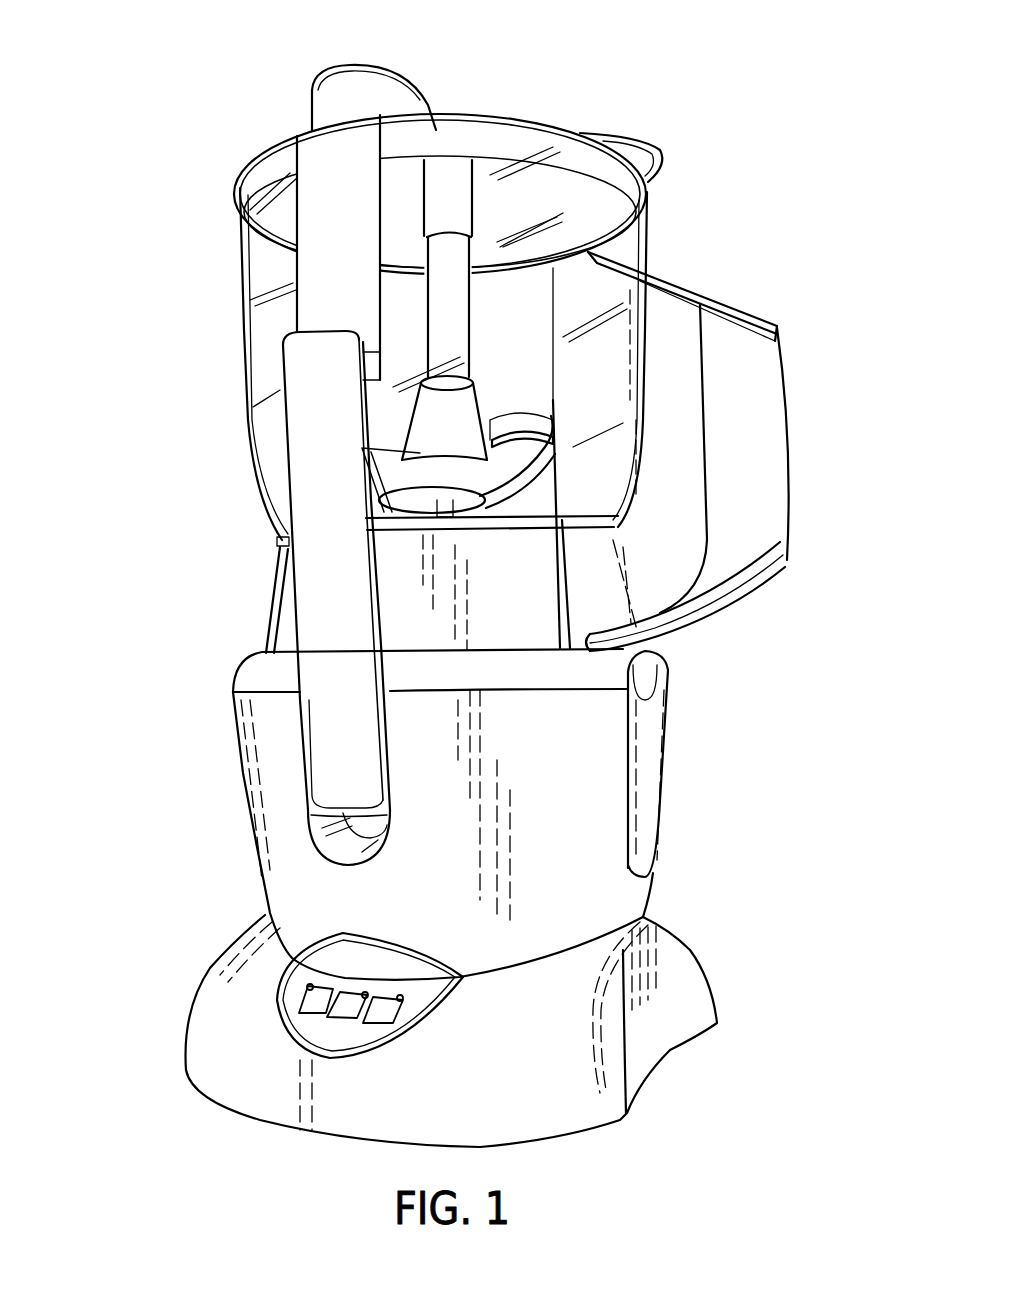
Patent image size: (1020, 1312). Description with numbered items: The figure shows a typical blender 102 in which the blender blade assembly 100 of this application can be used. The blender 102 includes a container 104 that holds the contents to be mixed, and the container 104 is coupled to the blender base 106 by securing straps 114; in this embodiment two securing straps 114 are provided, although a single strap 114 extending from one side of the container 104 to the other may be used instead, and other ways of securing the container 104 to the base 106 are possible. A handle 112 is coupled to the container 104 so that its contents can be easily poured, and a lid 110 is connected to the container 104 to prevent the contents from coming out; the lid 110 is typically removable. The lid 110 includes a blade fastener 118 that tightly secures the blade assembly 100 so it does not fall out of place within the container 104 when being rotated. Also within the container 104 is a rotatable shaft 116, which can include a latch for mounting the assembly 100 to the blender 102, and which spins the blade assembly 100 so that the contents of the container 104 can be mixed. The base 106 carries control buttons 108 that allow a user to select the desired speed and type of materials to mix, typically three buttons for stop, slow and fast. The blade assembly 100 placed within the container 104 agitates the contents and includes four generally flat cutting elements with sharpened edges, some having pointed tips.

The blender blade assembly 100 is at (440, 425).
The blender 102 is at (155, 211).
The container 104 is at (262, 341).
The blender base 106 is at (610, 775).
The control buttons 108 is at (300, 1000).
The lid 110 is at (358, 78).
The handle 112 is at (760, 468).
The securing straps 114 is at (597, 262).
The rotatable shaft 116 is at (440, 505).
The blade fastener 118 is at (457, 176).